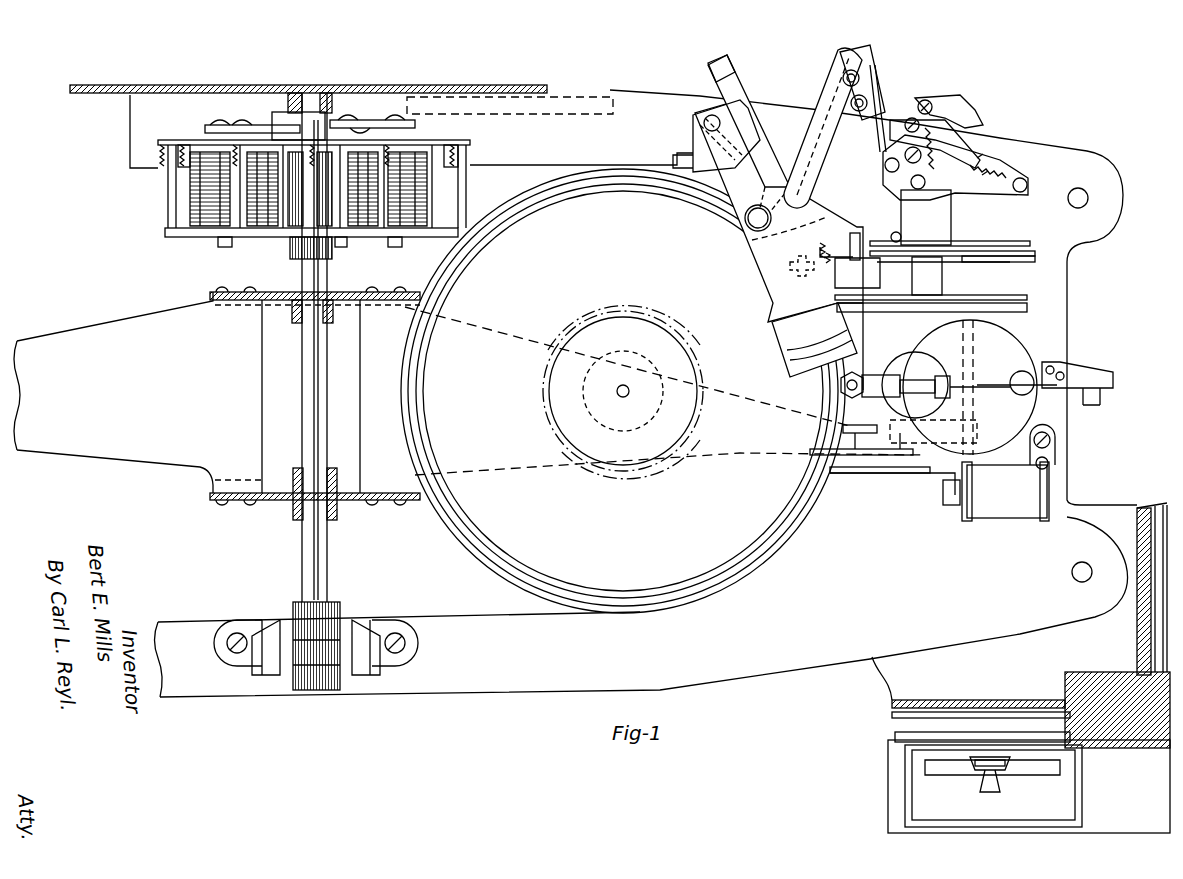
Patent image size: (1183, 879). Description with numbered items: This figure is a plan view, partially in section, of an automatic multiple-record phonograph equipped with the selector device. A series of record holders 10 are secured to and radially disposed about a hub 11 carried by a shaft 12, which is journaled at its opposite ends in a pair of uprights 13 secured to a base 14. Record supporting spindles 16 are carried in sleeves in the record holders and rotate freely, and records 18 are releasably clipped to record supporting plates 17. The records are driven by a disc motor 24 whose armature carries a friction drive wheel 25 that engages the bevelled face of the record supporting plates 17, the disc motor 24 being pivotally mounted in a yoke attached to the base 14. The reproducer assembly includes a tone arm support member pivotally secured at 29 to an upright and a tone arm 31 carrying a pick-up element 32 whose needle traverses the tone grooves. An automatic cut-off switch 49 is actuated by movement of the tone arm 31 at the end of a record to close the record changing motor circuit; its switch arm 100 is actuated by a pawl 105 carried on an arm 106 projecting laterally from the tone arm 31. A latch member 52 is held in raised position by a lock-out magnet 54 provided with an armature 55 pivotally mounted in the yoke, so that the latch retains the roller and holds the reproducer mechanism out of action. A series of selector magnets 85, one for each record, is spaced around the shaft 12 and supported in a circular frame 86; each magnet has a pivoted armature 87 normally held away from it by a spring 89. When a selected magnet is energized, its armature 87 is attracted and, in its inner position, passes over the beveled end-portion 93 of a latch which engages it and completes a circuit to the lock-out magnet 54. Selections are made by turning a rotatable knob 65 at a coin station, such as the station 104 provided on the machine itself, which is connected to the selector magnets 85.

The record holders 10 is at (120, 470).
The hub 11 is at (260, 510).
The shaft 12 is at (318, 410).
The uprights 13 is at (375, 672).
The base 14 is at (365, 88).
The record supporting spindles 16 is at (625, 398).
The record supporting plates 17 is at (722, 572).
The records 18 is at (623, 391).
The disc motor 24 is at (985, 452).
The friction drive wheel 25 is at (868, 375).
The pivot 29 is at (942, 278).
The tone arm 31 is at (775, 275).
The pick-up element 32 is at (795, 372).
The automatic cut-off switch 49 is at (985, 145).
The latch member 52 is at (862, 478).
The magnet 54 is at (1017, 520).
The armature 55 is at (943, 498).
The rotatable knob 65 is at (1008, 800).
The magnets 85 is at (195, 200).
The circular frame 86 is at (365, 243).
The armature 87 is at (440, 142).
The spring 89 is at (462, 152).
The beveled end-portion 93 is at (275, 120).
The switch arm 100 is at (905, 105).
The coin station 104 is at (1082, 773).
The pawl 105 is at (870, 78).
The arm 106 is at (808, 135).